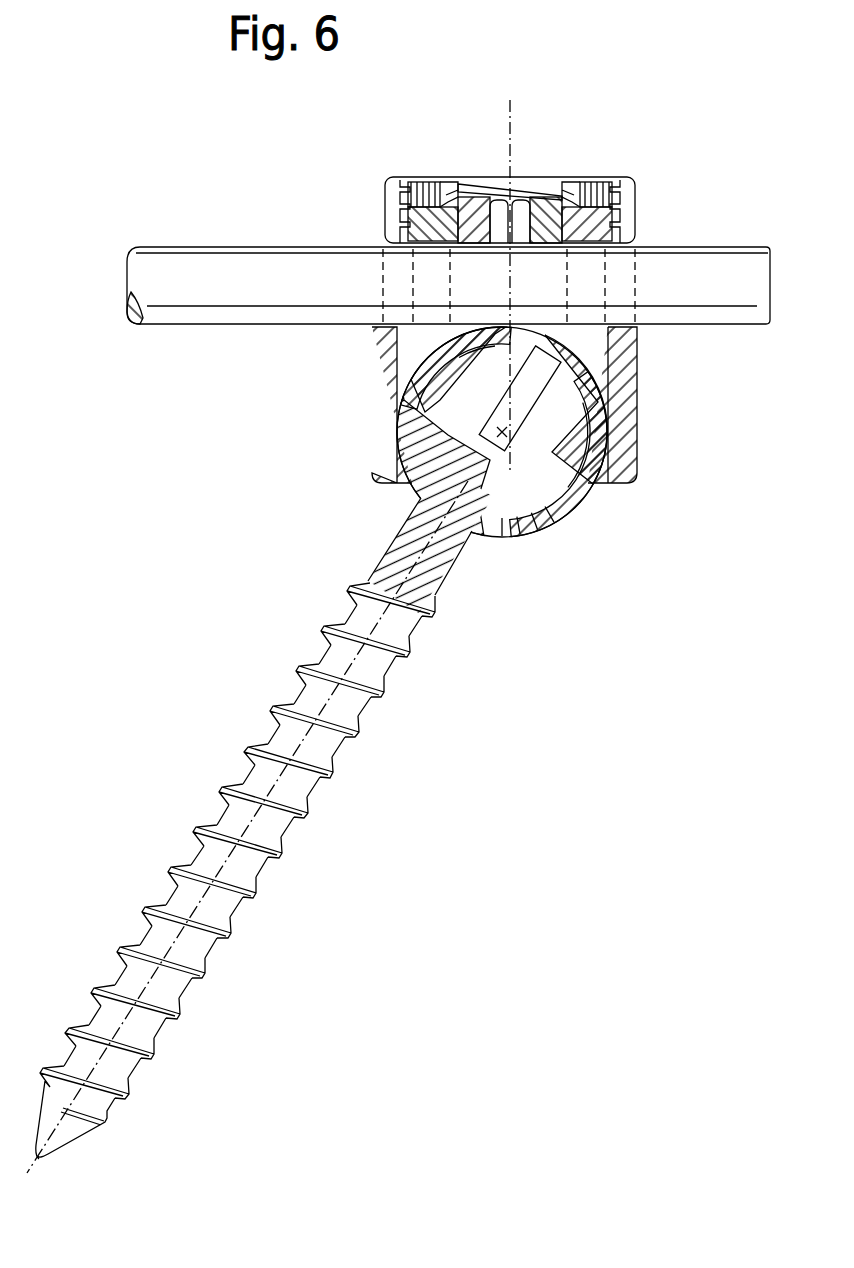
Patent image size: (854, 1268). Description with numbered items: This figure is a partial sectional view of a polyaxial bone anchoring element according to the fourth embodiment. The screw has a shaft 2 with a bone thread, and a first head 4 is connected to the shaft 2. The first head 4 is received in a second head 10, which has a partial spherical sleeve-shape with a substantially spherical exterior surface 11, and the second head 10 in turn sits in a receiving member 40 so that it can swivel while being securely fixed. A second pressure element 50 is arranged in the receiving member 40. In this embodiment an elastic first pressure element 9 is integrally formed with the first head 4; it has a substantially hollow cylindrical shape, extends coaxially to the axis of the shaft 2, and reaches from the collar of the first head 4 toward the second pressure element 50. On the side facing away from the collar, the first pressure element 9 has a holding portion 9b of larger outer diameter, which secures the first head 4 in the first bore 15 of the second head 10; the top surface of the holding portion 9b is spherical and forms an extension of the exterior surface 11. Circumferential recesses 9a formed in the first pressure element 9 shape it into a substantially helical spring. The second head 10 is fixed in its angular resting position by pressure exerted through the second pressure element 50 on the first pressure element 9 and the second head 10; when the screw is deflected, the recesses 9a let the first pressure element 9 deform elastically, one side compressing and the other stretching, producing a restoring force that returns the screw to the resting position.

The shaft 2 is at (272, 738).
The first head 4 is at (430, 472).
The first pressure element 9 is at (400, 388).
The circumferential recesses 9a is at (575, 446).
The holding portion 9b is at (467, 327).
The second head 10 is at (557, 496).
The exterior surface 11 is at (530, 536).
The first bore 15 is at (585, 488).
The receiving member 40 is at (383, 352).
The second pressure element 50 is at (637, 352).